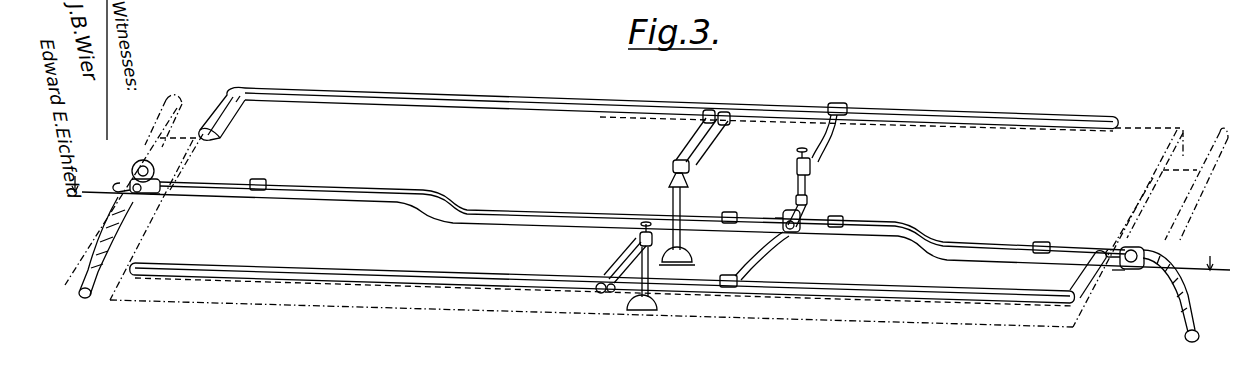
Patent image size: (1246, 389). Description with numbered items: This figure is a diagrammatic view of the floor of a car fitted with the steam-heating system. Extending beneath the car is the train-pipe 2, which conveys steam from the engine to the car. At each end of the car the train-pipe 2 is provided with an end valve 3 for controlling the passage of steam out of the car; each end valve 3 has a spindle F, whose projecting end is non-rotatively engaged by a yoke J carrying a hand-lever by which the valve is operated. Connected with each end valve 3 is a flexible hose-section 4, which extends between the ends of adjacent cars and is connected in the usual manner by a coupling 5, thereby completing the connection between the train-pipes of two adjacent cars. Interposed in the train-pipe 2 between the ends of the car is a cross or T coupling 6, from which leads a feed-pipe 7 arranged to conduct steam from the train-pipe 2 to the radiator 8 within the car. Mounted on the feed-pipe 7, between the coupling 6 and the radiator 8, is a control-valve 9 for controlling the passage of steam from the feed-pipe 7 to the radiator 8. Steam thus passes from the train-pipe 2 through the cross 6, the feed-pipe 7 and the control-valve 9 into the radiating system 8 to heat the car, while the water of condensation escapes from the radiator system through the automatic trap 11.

The train-pipe 2 is at (365, 186).
The end valve 3 is at (155, 165).
The flexible hose-section 4 is at (118, 220).
The coupling 5 is at (637, 242).
The cross or T coupling 6 is at (800, 212).
The feed-pipe 7 is at (808, 185).
The radiator 8 is at (540, 98).
The control-valve 9 is at (797, 170).
The automatic trap 11 is at (686, 203).
The spindle F is at (140, 160).
The yoke J is at (629, 190).